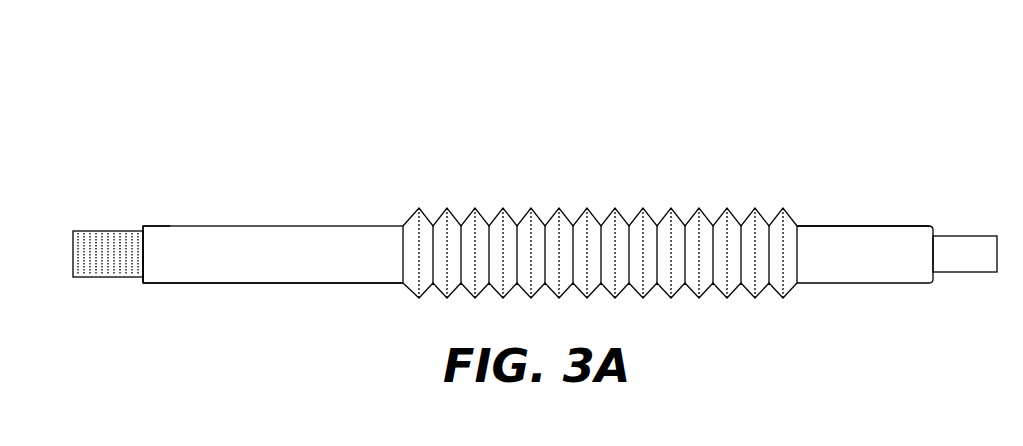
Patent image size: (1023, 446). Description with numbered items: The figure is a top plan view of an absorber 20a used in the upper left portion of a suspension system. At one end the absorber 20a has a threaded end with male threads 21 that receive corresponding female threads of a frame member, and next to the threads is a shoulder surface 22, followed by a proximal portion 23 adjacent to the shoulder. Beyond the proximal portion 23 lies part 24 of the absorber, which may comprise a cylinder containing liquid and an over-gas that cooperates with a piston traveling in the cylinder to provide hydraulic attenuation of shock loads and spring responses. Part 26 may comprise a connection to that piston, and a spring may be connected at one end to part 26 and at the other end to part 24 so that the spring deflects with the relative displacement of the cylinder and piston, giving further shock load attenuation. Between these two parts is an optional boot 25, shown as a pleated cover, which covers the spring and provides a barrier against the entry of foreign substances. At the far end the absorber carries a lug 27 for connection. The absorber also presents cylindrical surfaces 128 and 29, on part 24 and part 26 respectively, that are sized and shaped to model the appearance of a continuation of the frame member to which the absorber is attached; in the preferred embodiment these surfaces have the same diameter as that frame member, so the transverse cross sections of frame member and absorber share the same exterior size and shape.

The absorber 20a is at (584, 108).
The male threads 21 is at (82, 231).
The shoulder surface 22 is at (140, 226).
The proximal portion 23 is at (164, 283).
The part of the absorber 24 is at (277, 232).
The cylindrical surface 128 is at (342, 283).
The boot 25 is at (594, 224).
The part of the absorber 26 is at (865, 283).
The cylindrical surface 29 is at (850, 226).
The lug 27 is at (962, 242).